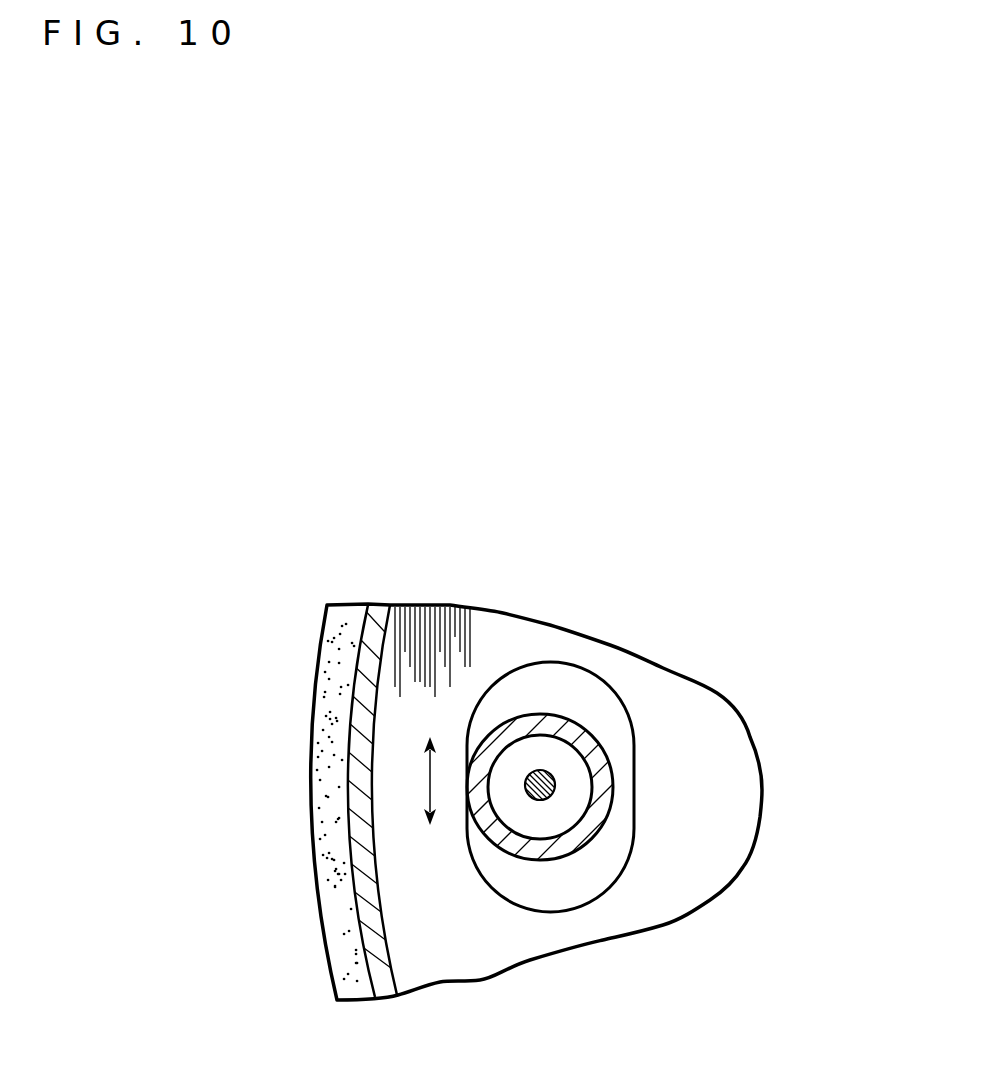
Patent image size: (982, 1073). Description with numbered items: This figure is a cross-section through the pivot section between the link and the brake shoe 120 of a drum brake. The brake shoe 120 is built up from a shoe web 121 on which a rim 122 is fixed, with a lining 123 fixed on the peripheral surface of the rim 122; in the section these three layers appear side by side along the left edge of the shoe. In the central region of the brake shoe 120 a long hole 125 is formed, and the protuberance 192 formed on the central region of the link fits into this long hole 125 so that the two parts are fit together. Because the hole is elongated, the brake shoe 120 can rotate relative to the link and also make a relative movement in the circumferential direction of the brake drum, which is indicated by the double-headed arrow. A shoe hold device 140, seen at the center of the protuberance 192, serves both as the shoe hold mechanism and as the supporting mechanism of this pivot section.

The brake shoe 120 is at (312, 672).
The shoe web 121 is at (503, 613).
The rim 122 is at (380, 607).
The lining 123 is at (340, 603).
The long hole 125 is at (606, 690).
The protuberance 192 is at (613, 767).
The shoe hold device 140 is at (558, 788).